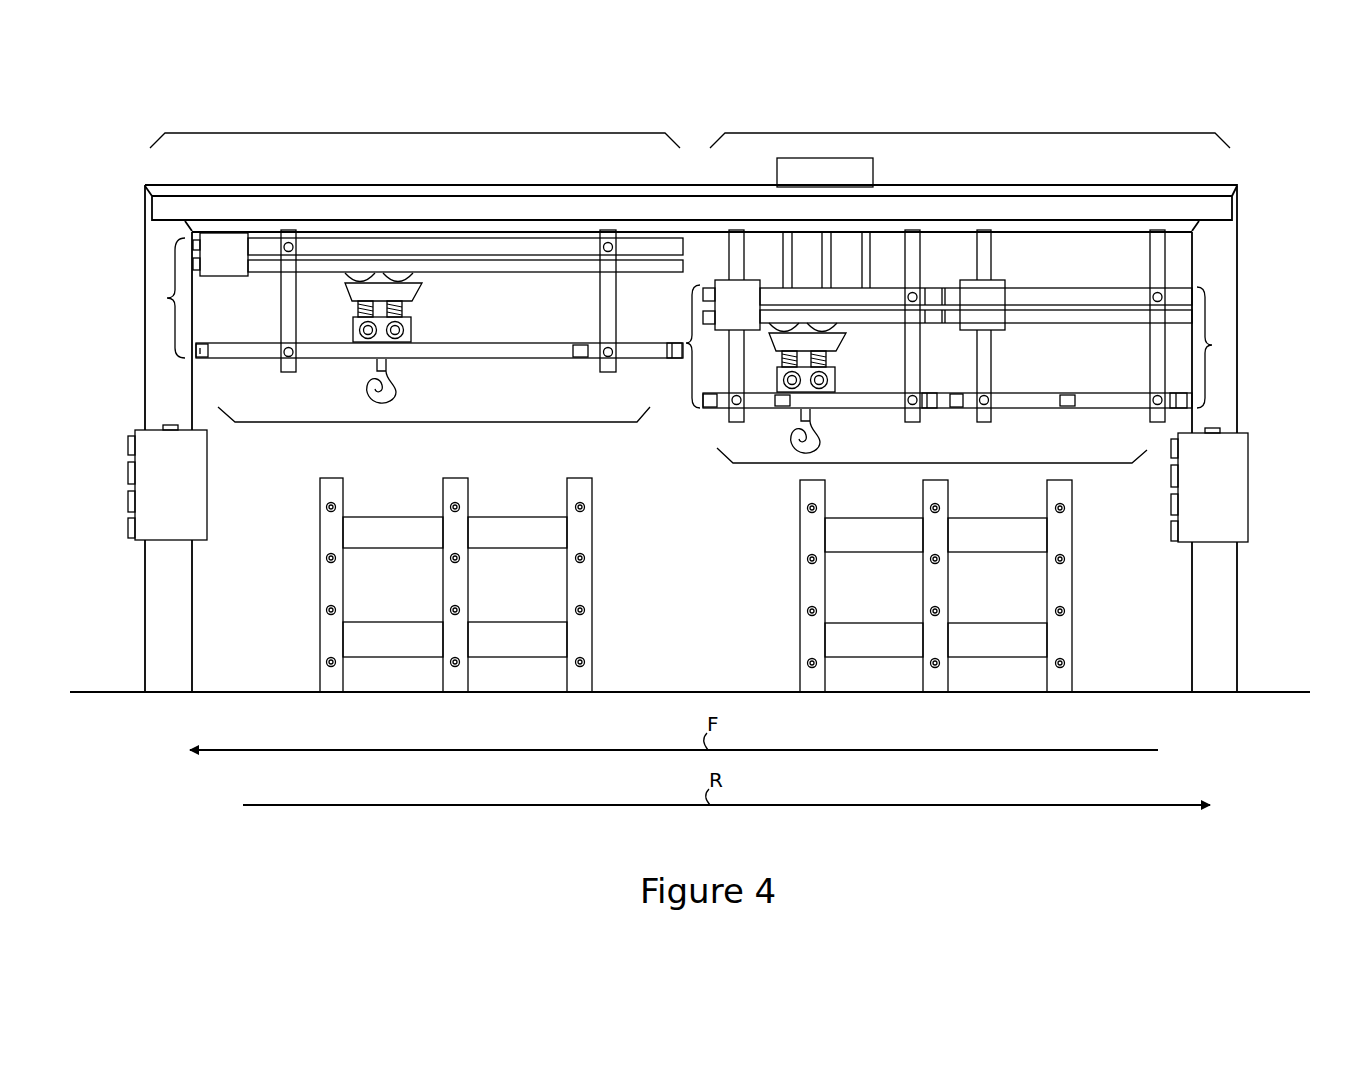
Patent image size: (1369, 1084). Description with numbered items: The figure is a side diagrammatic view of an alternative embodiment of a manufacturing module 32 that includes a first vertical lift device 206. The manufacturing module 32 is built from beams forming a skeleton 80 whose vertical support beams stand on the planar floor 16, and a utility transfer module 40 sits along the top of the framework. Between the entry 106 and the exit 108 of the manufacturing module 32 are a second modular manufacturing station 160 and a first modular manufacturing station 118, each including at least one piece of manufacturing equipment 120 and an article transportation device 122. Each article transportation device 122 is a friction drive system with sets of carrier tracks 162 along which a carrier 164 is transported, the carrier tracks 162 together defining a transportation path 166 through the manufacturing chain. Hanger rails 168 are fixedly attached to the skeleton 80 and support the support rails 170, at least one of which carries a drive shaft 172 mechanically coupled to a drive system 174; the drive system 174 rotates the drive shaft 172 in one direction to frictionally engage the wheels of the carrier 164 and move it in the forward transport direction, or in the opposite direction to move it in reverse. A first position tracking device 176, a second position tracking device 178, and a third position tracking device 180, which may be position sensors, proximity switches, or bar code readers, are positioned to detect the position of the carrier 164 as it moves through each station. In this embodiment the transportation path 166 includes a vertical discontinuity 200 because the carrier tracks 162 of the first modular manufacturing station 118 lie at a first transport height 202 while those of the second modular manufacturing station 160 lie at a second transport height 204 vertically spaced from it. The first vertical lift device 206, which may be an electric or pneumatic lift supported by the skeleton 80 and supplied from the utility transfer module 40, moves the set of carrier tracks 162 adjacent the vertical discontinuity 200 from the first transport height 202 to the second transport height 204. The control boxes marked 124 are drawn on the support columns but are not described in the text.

The planar floor 16 is at (1283, 690).
The manufacturing module 32 is at (1282, 128).
The utility transfer module 40 is at (1157, 207).
The skeleton 80 is at (88, 187).
The entry 106 is at (1318, 430).
The exit 108 is at (90, 430).
The first modular manufacturing station 118 is at (962, 133).
The manufacturing equipment 120 is at (320, 540).
The article transportation device 122 is at (420, 424).
The control box 124 is at (155, 485).
The second modular manufacturing station 160 is at (400, 133).
The carrier tracks 162 is at (165, 298).
The carrier 164 is at (417, 307).
The transportation path 166 is at (610, 430).
The hanger rails 168 is at (284, 333).
The support rails 170 is at (336, 255).
The drive shaft 172 is at (560, 262).
The drive system 174 is at (241, 264).
The first position tracking device 176 is at (672, 358).
The second position tracking device 178 is at (202, 360).
The third position tracking device 180 is at (577, 358).
The vertical discontinuity 200 is at (690, 455).
The first transport height 202 is at (1243, 305).
The second transport height 204 is at (128, 330).
The first vertical lift device 206 is at (809, 184).